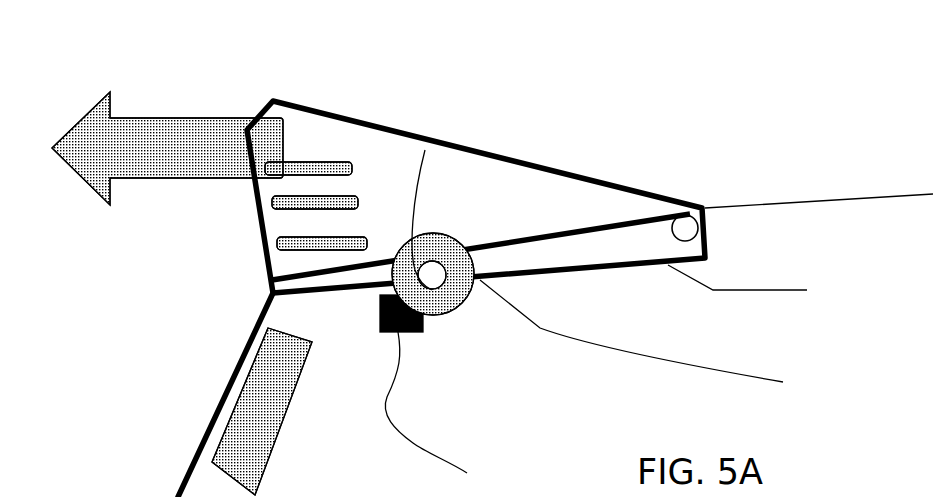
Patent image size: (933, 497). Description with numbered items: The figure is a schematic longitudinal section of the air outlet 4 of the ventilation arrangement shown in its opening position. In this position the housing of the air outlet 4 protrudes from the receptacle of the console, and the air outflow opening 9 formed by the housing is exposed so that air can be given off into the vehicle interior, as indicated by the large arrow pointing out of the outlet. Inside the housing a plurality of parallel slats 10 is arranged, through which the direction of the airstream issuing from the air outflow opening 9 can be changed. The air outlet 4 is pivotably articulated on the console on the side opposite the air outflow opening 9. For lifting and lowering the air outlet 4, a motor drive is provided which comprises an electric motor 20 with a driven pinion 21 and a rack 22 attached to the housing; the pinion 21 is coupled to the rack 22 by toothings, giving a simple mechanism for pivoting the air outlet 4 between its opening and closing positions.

The air outlet 4 is at (368, 142).
The air outflow opening 9 is at (231, 182).
The slats 10 is at (280, 212).
The electric motor 20 is at (420, 332).
The pinion 21 is at (445, 300).
The rack 22 is at (422, 178).